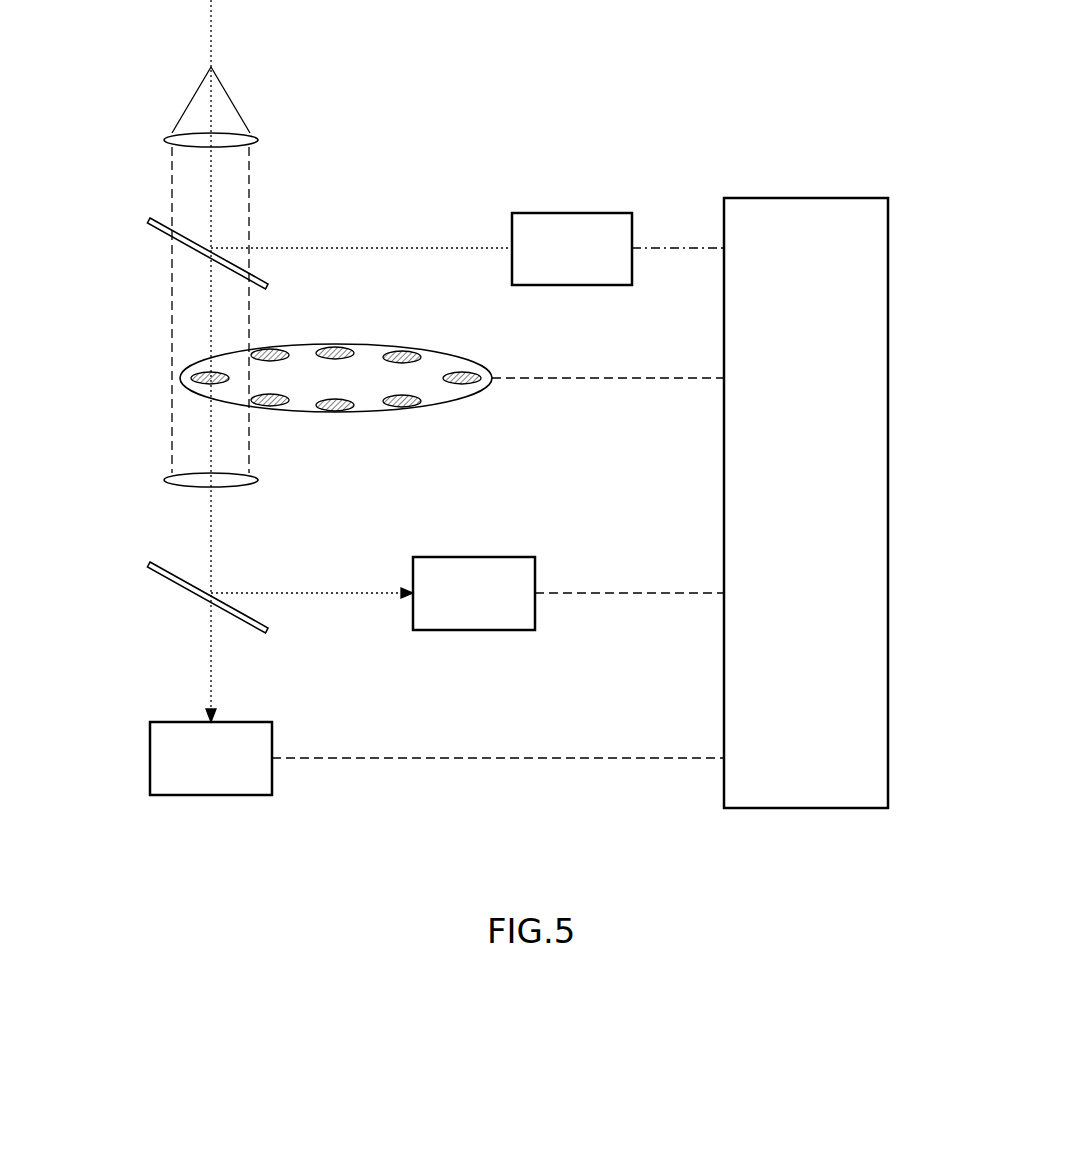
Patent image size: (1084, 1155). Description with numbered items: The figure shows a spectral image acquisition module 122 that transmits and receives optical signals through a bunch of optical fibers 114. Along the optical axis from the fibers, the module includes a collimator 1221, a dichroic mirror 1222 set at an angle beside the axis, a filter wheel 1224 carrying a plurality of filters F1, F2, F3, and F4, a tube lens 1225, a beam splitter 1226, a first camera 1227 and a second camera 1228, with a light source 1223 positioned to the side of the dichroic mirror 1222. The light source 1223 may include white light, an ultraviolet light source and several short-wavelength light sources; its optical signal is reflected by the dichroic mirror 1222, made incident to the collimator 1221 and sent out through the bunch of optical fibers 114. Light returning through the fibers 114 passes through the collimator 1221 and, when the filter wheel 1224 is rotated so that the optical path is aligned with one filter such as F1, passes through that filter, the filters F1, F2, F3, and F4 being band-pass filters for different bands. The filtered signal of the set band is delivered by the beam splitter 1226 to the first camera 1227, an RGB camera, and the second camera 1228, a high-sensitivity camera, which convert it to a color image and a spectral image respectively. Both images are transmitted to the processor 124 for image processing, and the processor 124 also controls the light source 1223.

The bunch of optical fibers 114 is at (211, 18).
The spectral image acquisition module 122 is at (467, 82).
The processor 124 is at (808, 198).
The collimator 1221 is at (258, 140).
The dichroic mirror 1222 is at (148, 217).
The light source 1223 is at (572, 213).
The filter wheel 1224 is at (365, 357).
The filter F1 is at (210, 376).
The filter F2 is at (268, 353).
The filter F3 is at (334, 351).
The filter F4 is at (400, 355).
The tube lens 1225 is at (258, 480).
The beam splitter 1226 is at (148, 561).
The first camera 1227 is at (475, 557).
The second camera 1228 is at (245, 722).